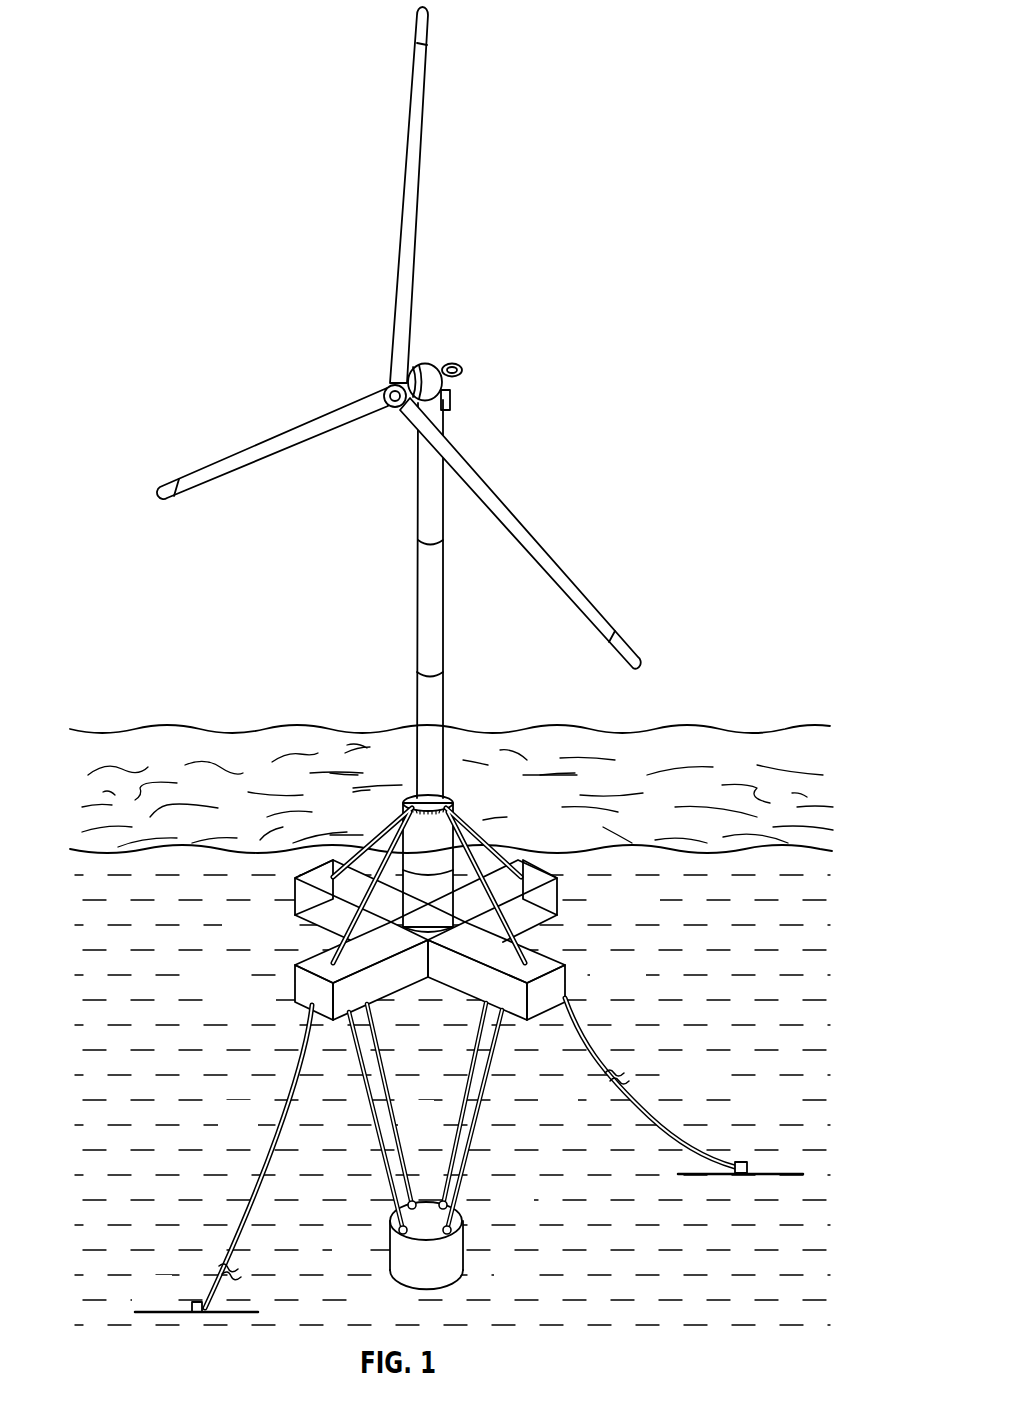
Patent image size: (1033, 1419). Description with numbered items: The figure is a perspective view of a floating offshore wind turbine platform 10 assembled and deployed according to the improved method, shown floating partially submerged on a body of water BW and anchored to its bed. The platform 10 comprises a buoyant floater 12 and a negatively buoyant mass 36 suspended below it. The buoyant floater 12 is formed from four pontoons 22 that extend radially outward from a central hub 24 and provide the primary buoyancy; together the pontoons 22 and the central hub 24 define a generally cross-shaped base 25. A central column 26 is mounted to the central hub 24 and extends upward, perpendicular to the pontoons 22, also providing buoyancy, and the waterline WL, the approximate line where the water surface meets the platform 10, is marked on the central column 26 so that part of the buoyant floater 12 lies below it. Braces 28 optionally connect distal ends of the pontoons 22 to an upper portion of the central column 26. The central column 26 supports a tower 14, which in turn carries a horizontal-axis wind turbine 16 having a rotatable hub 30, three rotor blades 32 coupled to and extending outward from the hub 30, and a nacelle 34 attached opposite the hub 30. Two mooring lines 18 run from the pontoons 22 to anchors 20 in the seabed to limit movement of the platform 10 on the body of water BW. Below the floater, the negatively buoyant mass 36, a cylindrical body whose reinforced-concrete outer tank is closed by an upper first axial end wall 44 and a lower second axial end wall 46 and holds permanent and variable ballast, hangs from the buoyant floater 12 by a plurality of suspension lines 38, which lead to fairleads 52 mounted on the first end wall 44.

The floating offshore wind turbine platform 10 is at (448, 666).
The buoyant floater 12 is at (441, 902).
The tower 14 is at (428, 610).
The wind turbine 16 is at (396, 338).
The mooring line 18 is at (283, 1123).
The anchor 20 is at (197, 1302).
The pontoon 22 is at (557, 892).
The central hub 24 is at (400, 918).
The cross-shaped base 25 is at (441, 915).
The central column 26 is at (465, 805).
The brace 28 is at (478, 860).
The hub 30 is at (396, 408).
The rotor blade 32 is at (413, 162).
The nacelle 34 is at (425, 370).
The negatively buoyant mass 36 is at (444, 1209).
The suspension line 38 is at (467, 1088).
The first axial end wall 44 is at (428, 1208).
The second axial end wall 46 is at (413, 1288).
The fairlead 52 is at (460, 1222).
The body of water BW is at (767, 748).
The waterline WL is at (432, 870).